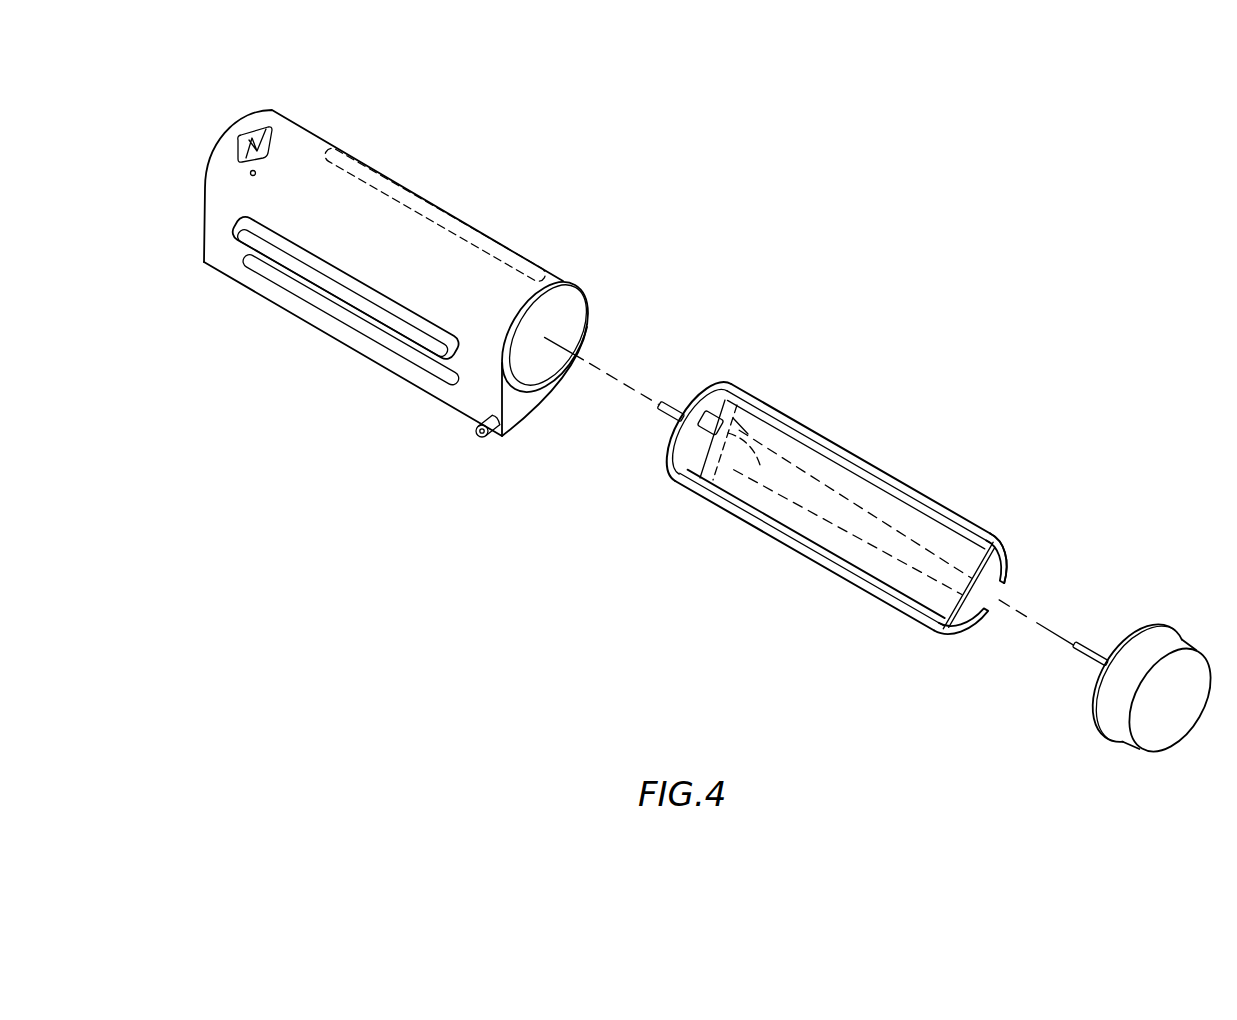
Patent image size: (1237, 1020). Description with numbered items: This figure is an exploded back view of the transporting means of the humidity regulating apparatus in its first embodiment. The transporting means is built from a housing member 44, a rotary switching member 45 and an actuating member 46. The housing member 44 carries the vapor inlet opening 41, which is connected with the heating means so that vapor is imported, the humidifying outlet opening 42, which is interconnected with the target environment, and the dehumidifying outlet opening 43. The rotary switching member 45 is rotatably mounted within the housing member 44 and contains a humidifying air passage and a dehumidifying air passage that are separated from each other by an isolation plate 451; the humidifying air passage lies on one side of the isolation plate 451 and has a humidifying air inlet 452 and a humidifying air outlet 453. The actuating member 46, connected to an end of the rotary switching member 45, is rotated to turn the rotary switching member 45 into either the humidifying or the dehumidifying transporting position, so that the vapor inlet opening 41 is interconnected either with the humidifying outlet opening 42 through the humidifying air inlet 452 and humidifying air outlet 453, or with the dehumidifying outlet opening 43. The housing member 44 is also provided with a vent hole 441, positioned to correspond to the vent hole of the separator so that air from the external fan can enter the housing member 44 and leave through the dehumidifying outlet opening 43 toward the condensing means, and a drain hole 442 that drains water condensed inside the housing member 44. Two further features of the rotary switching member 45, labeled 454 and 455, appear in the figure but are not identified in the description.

The vapor inlet opening 41 is at (252, 124).
The humidifying outlet opening 42 is at (393, 193).
The dehumidifying outlet opening 43 is at (333, 287).
The housing member 44 is at (433, 247).
The vent hole 441 is at (372, 330).
The drain hole 442 is at (478, 437).
The rotary switching member 45 is at (890, 478).
The isolation plate 451 is at (1002, 563).
The humidifying air inlet 452 is at (773, 407).
The humidifying air outlet 453 is at (999, 599).
The block 454 is at (718, 417).
The ledge 455 is at (847, 467).
The actuating member 46 is at (1178, 705).